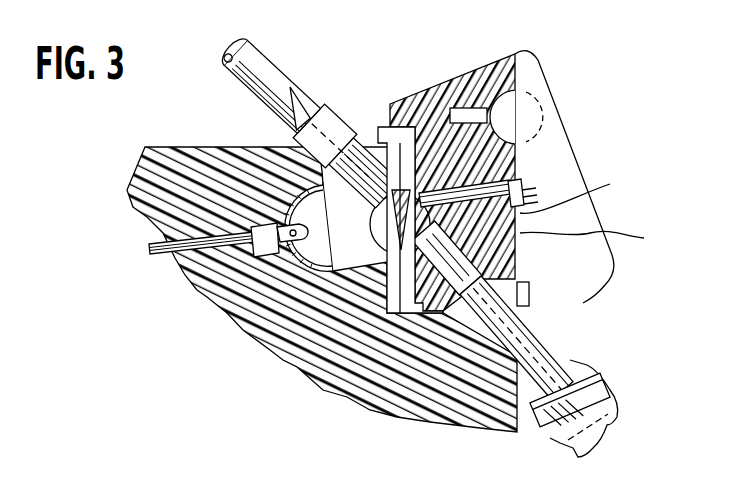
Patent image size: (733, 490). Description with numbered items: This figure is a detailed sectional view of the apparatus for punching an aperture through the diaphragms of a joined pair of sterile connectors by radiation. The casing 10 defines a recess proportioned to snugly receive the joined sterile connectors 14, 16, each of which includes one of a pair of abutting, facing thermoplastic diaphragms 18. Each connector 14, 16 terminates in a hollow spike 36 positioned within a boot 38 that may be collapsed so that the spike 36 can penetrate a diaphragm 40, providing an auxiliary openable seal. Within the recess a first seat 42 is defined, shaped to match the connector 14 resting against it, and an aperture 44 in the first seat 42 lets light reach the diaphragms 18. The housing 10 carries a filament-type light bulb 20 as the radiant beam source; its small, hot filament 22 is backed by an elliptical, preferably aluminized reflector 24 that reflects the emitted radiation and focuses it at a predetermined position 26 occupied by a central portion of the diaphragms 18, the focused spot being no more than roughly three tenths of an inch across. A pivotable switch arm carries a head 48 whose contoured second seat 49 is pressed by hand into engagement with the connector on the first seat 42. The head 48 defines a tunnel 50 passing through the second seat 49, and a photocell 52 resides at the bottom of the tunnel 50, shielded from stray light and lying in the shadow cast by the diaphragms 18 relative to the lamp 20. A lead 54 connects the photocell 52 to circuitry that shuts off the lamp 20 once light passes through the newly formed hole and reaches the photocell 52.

The casing 10 is at (157, 187).
The sterile connector 14 is at (279, 259).
The sterile connector 16 is at (437, 180).
The thermoplastic diaphragms 18 is at (414, 152).
The filament-type light bulb 20 is at (291, 243).
The filament 22 is at (262, 265).
The reflector 24 is at (323, 272).
The predetermined position 26 is at (398, 216).
The hollow spike 36 is at (318, 97).
The boot 38 is at (266, 72).
The diaphragm 40 is at (262, 86).
The first seat 42 is at (433, 361).
The aperture 44 is at (288, 196).
The head 48 is at (553, 143).
The second seat 49 is at (434, 195).
The tunnel 50 is at (595, 241).
The photocell 52 is at (579, 238).
The lead 54 is at (543, 187).